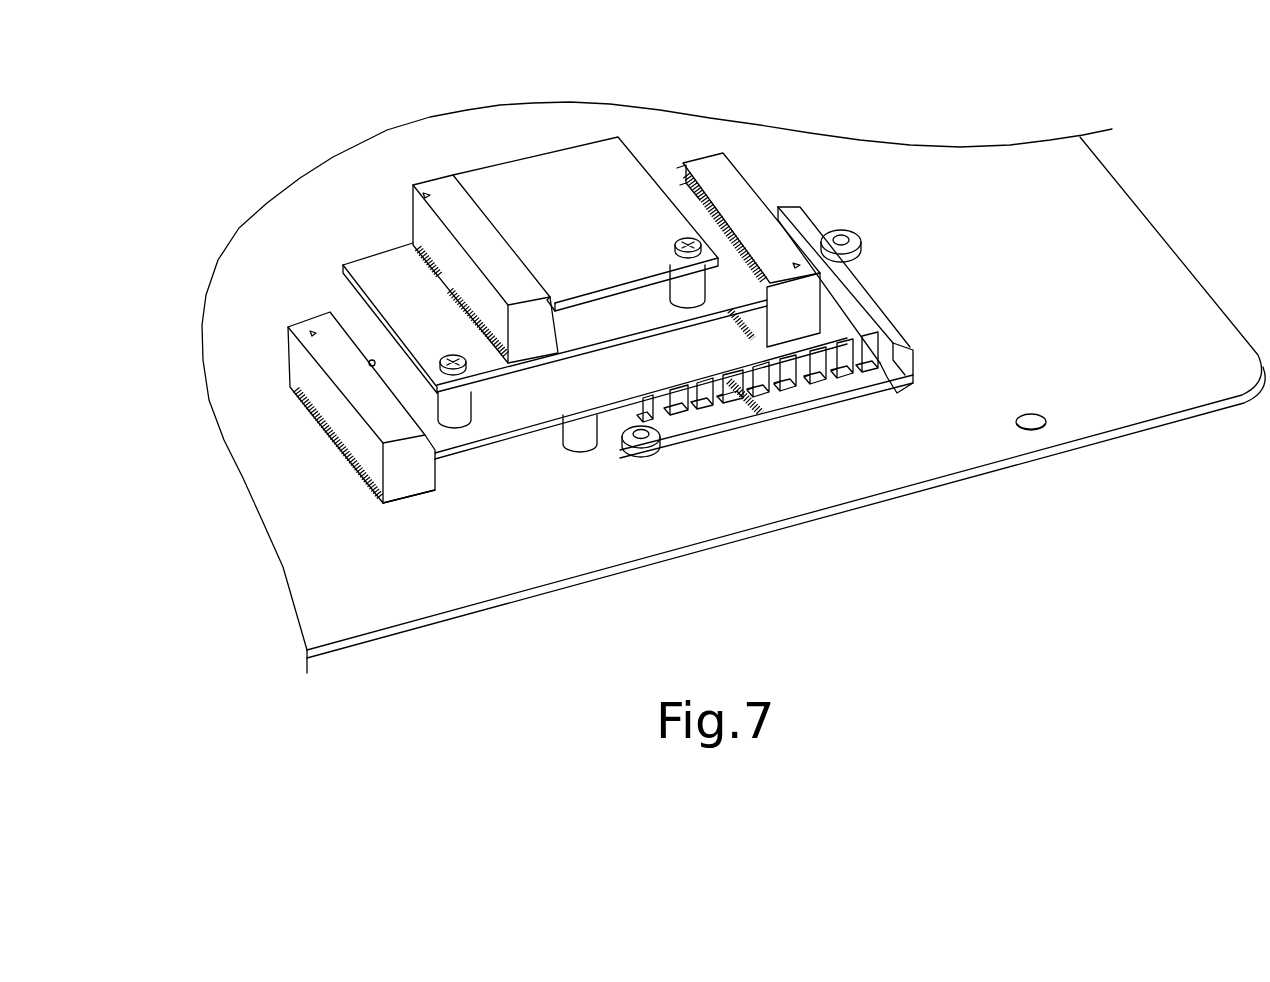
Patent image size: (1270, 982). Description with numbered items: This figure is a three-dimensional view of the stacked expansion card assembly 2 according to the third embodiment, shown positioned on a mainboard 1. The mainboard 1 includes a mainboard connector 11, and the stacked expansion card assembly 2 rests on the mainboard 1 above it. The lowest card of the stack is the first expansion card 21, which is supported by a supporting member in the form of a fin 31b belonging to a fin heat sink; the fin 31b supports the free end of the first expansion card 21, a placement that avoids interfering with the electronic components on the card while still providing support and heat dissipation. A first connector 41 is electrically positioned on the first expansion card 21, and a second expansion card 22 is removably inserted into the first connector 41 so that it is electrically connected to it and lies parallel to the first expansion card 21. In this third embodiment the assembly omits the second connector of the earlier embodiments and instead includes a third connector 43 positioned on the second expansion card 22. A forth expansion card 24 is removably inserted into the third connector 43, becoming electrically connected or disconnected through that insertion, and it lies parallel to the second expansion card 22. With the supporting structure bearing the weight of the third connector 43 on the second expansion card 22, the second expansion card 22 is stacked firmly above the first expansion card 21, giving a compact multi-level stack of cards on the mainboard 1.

The mainboard 1 is at (545, 558).
The stacked expansion card assembly 2 is at (322, 161).
The mainboard connector 11 is at (408, 483).
The first expansion card 21 is at (347, 317).
The second expansion card 22 is at (675, 188).
The forth expansion card 24 is at (553, 177).
The fin 31b is at (793, 397).
The first connector 41 is at (745, 198).
The third connector 43 is at (447, 187).